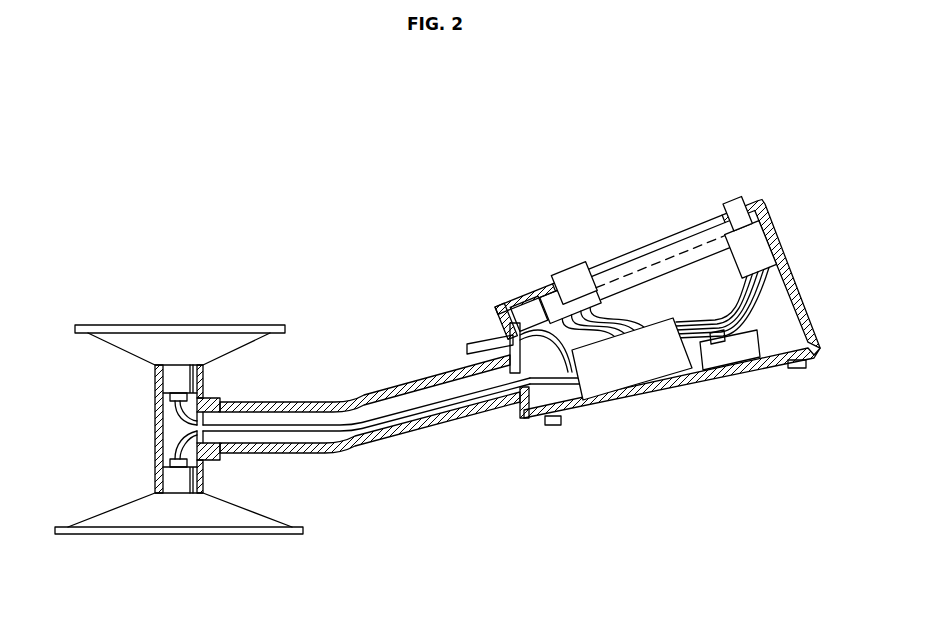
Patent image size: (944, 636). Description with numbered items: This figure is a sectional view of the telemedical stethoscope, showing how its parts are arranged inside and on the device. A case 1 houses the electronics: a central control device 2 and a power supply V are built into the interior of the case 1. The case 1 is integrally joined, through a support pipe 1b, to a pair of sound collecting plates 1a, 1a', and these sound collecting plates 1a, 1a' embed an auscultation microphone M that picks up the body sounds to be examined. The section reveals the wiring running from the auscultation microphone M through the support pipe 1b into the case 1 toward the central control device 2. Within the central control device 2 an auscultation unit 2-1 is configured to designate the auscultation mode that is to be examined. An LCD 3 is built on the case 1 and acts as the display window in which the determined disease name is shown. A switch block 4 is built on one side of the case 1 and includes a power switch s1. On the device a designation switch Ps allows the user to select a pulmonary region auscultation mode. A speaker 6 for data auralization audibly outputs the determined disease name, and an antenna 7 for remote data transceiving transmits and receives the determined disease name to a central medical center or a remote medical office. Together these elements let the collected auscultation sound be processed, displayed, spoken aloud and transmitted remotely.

The case 1 is at (600, 412).
The sound collecting plate 1a is at (179, 545).
The sound collecting plate 1a' is at (180, 303).
The support pipe 1b is at (360, 388).
The central control device 2 is at (636, 370).
The auscultation unit 2-1 is at (580, 297).
The LCD 3 is at (645, 255).
The switch block 4 is at (763, 247).
The speaker 6 is at (525, 311).
The antenna 7 is at (483, 340).
The auscultation microphone M is at (175, 383).
The designation switch for a pulmonary region auscultation mode Ps is at (580, 265).
The power switch s1 is at (733, 210).
The power supply V is at (733, 352).